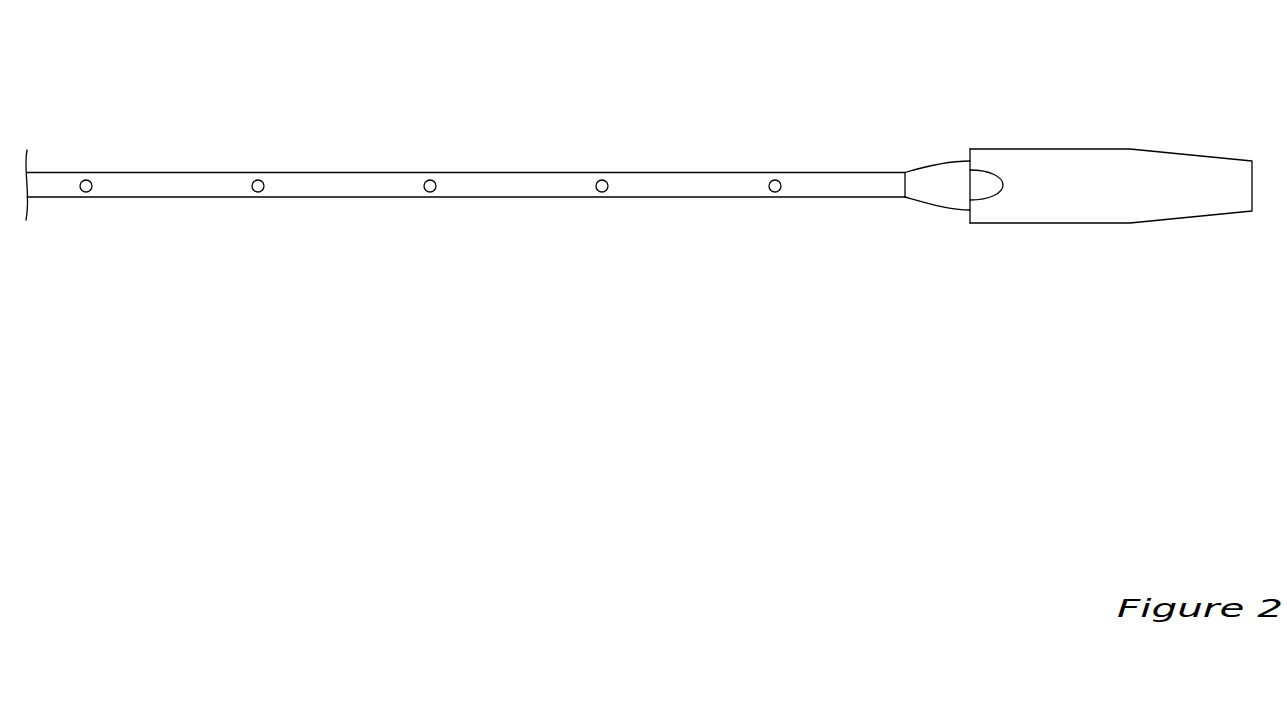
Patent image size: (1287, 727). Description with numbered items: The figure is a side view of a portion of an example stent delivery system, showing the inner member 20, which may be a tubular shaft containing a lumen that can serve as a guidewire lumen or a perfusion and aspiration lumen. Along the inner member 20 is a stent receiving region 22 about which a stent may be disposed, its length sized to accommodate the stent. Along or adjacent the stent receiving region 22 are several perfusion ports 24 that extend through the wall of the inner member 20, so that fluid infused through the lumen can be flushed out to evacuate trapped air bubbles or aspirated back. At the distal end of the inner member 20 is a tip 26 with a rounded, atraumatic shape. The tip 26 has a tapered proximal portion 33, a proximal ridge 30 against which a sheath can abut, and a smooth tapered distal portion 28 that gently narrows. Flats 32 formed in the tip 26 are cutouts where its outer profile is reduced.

The inner member 20 is at (335, 122).
The stent receiving region 22 is at (465, 172).
The perfusion ports 24 is at (258, 182).
The tip 26 is at (1074, 172).
The tapered distal portion 28 is at (1145, 150).
The proximal ridge 30 is at (970, 153).
The flats 32 is at (986, 188).
The tapered proximal portion 33 is at (940, 198).